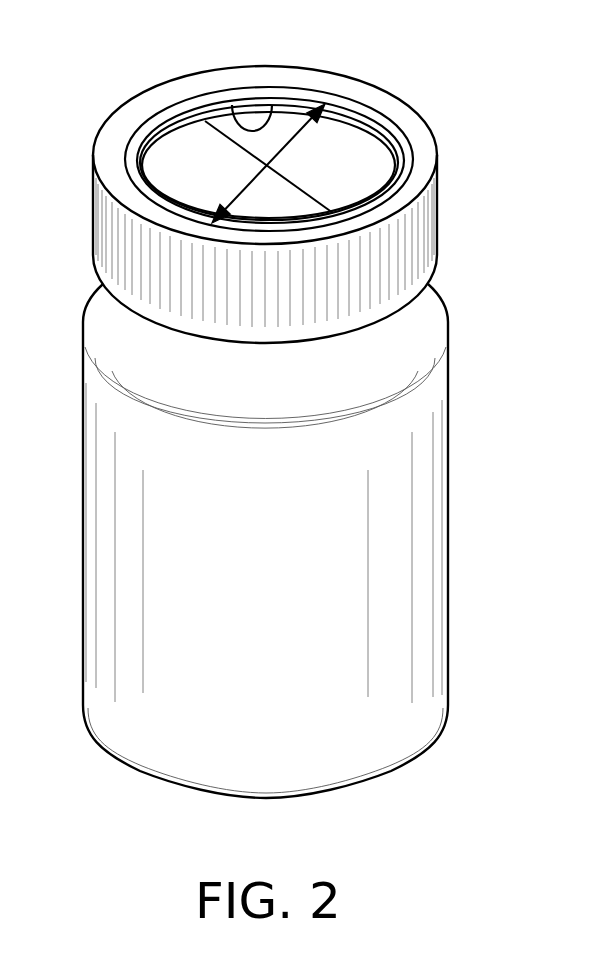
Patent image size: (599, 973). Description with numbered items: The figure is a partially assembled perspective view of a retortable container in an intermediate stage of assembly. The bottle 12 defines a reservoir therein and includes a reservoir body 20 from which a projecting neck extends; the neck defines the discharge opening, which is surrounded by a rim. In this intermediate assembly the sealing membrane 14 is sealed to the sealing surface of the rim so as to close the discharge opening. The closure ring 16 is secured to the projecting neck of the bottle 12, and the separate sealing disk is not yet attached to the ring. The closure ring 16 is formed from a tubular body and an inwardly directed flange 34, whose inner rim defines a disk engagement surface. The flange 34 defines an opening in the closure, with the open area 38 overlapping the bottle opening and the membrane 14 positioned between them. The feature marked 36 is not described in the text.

The bottle 12 is at (399, 607).
The reservoir body 20 is at (400, 492).
The closure ring 16 is at (412, 236).
The inwardly directed flange 34 is at (395, 156).
The sealing membrane 14 is at (311, 163).
The notch 36 is at (232, 112).
The open area 38 is at (242, 191).